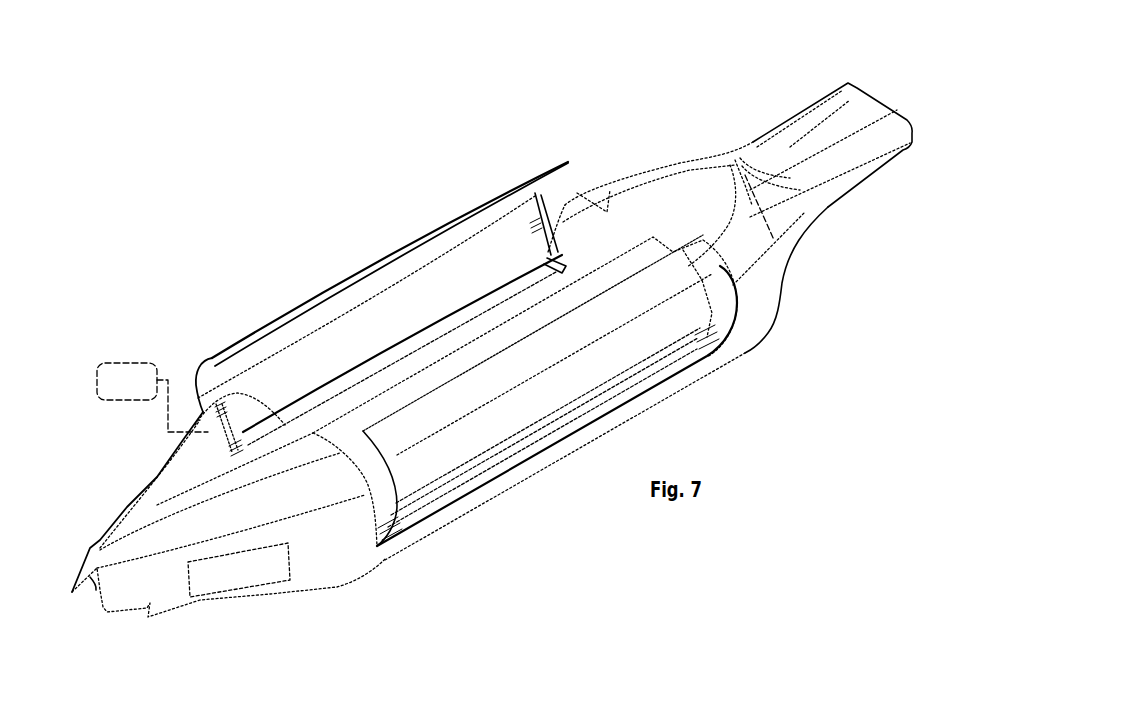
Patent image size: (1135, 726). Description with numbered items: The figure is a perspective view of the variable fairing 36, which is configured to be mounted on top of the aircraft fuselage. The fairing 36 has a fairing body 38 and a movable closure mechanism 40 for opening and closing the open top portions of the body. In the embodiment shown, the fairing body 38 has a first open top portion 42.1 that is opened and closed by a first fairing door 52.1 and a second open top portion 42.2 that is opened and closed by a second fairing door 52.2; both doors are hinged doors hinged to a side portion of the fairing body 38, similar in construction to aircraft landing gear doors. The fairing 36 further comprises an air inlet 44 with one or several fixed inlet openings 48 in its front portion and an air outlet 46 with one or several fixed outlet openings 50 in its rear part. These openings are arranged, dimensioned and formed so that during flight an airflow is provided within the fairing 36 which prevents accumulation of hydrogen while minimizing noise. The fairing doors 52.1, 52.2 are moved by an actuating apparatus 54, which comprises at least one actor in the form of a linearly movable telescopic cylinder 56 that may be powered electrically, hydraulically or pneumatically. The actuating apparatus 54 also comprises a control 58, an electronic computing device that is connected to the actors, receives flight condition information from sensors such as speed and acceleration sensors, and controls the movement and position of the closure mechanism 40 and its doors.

The fairing 36 is at (240, 226).
The fairing body 38 is at (757, 308).
The movable closure mechanism 40 is at (272, 313).
The first open top portion 42.1 is at (502, 262).
The second open top portion 42.2 is at (640, 262).
The air inlet 44 is at (790, 208).
The air outlet 46 is at (212, 565).
The fixed inlet openings 48 is at (745, 172).
The fixed outlet openings 50 is at (127, 537).
The first fairing door 52.1 is at (377, 280).
The second fairing door 52.2 is at (657, 335).
The actuating apparatus 54 is at (185, 382).
The telescopic cylinder 56 is at (215, 435).
The control 58 is at (117, 385).